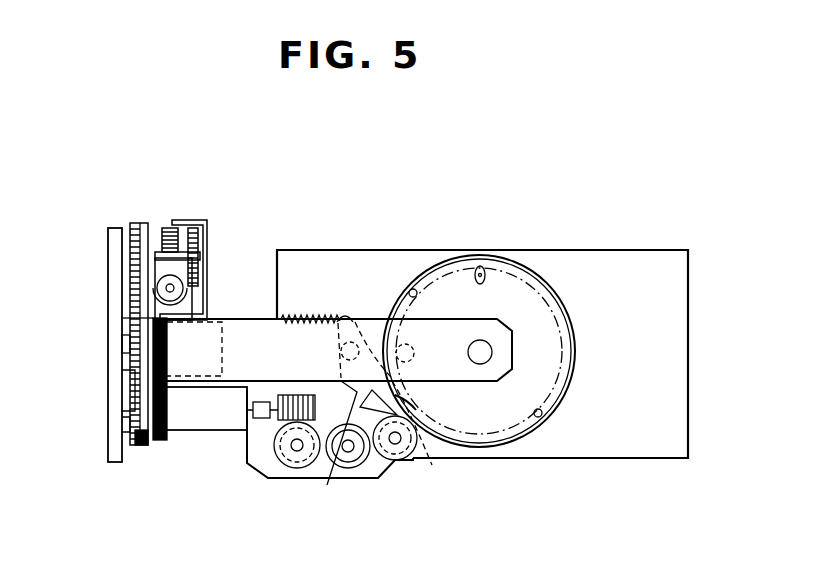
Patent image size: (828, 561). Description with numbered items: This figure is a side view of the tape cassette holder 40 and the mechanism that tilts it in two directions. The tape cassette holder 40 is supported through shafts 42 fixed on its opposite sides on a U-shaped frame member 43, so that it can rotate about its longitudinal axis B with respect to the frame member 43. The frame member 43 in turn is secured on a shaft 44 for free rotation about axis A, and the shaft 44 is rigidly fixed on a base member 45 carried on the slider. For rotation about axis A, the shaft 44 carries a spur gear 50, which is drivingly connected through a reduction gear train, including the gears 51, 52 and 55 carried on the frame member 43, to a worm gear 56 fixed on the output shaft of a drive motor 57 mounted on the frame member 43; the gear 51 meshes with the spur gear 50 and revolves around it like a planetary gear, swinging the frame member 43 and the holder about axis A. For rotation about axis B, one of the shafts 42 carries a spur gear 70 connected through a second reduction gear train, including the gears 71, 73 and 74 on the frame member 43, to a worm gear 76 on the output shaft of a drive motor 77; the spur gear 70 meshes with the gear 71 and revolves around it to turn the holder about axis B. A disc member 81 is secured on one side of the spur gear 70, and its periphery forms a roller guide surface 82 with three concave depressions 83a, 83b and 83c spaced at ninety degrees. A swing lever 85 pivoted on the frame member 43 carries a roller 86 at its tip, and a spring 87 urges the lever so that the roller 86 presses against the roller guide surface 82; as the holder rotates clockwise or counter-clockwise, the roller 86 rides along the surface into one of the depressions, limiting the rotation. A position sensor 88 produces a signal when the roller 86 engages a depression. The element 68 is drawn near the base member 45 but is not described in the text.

The tape cassette holder 40 is at (608, 262).
The shaft 42 is at (490, 350).
The frame member 43 is at (236, 334).
The shaft 44 is at (128, 378).
The base member 45 is at (110, 232).
The spur gear 50 is at (142, 312).
The gear 51 is at (140, 225).
The gear 52 is at (205, 242).
The gear 55 is at (170, 228).
The worm gear 56 is at (185, 290).
The drive motor 57 is at (200, 290).
The stopper 68 is at (124, 345).
The spur gear 70 is at (548, 282).
The gear 71 is at (294, 460).
The gear 73 is at (352, 456).
The gear 74 is at (402, 452).
The worm gear 76 is at (297, 397).
The drive motor 77 is at (205, 420).
The disc member 81 is at (504, 440).
The roller guide surface 82 is at (440, 266).
The concave depression 83a is at (420, 404).
The concave depression 83b is at (540, 418).
The concave depression 83c is at (410, 290).
The swing lever 85 is at (345, 458).
The roller 86 is at (440, 468).
The spring 87 is at (300, 315).
The position sensor 88 is at (402, 344).